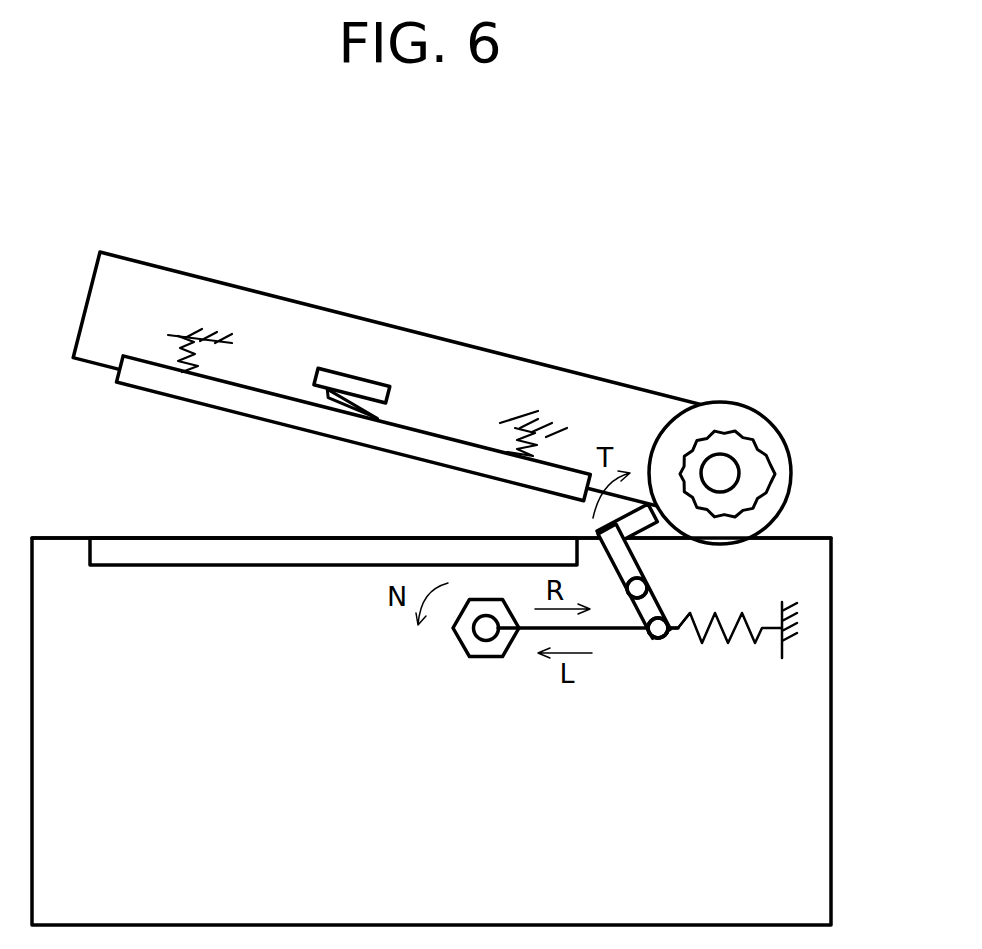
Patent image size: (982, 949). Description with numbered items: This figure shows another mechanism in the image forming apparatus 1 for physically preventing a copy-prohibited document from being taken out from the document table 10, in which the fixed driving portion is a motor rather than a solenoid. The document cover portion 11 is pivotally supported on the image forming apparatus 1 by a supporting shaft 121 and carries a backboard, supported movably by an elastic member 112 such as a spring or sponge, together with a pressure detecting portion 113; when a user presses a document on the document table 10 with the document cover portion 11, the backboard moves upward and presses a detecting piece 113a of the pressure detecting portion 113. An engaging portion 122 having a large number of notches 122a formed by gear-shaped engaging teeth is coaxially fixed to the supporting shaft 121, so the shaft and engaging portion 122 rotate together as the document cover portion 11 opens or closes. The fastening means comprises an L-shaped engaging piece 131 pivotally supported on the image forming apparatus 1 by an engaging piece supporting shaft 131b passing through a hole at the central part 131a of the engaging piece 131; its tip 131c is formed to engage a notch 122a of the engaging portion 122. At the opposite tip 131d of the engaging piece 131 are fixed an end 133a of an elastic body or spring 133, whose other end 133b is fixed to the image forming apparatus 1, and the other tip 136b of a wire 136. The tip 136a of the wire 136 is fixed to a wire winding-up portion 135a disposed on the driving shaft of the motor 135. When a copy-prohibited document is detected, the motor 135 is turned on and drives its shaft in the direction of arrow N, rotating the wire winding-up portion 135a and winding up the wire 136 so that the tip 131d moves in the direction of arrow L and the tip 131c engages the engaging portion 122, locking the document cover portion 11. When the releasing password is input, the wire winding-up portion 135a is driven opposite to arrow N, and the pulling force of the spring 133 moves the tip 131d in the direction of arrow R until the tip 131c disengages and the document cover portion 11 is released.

The image forming apparatus 1 is at (678, 245).
The document table 10 is at (158, 565).
The document cover portion 11 is at (487, 342).
The elastic member 112 is at (180, 360).
The pressure detecting portion 113 is at (357, 382).
The detecting piece 113a is at (340, 410).
The supporting shaft 121 is at (733, 483).
The engaging portion 122 is at (752, 457).
The notches 122a is at (735, 438).
The engaging piece 131 is at (600, 545).
The central part of the engaging piece 131a is at (664, 568).
The engaging piece supporting shaft 131b is at (630, 642).
The tip of the engaging piece 131c is at (652, 506).
The tip of the engaging piece 131d is at (665, 640).
The elastic body (spring) 133 is at (728, 638).
The end of the elastic body 133a is at (672, 638).
The other end of the spring 133b is at (788, 628).
The motor 135 is at (462, 641).
The wire winding-up portion 135a is at (482, 640).
The wire 136 is at (610, 628).
The tip of the wire 136a is at (500, 630).
The other tip of the wire 136b is at (645, 640).